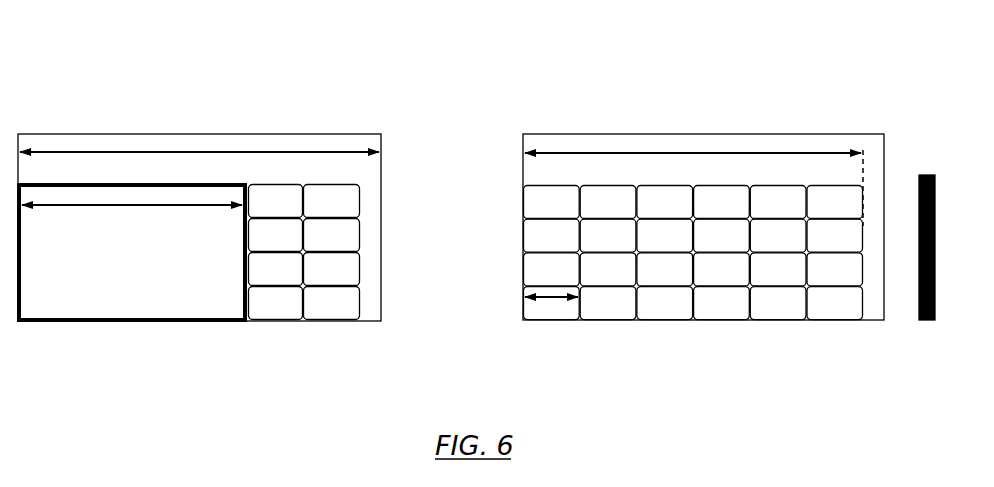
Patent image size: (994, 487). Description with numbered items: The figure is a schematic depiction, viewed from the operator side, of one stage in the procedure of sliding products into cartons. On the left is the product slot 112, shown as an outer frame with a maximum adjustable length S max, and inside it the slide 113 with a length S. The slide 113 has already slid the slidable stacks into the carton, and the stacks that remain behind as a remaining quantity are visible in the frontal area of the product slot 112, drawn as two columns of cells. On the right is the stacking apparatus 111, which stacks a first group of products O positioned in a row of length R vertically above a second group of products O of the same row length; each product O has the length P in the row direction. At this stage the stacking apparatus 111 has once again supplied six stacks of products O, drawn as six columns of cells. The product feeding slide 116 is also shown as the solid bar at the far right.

The stacking apparatus 111 is at (703, 207).
The product slot 112 is at (195, 110).
The slide 113 is at (142, 310).
The product feeding slide 116 is at (922, 302).
The products O is at (773, 303).